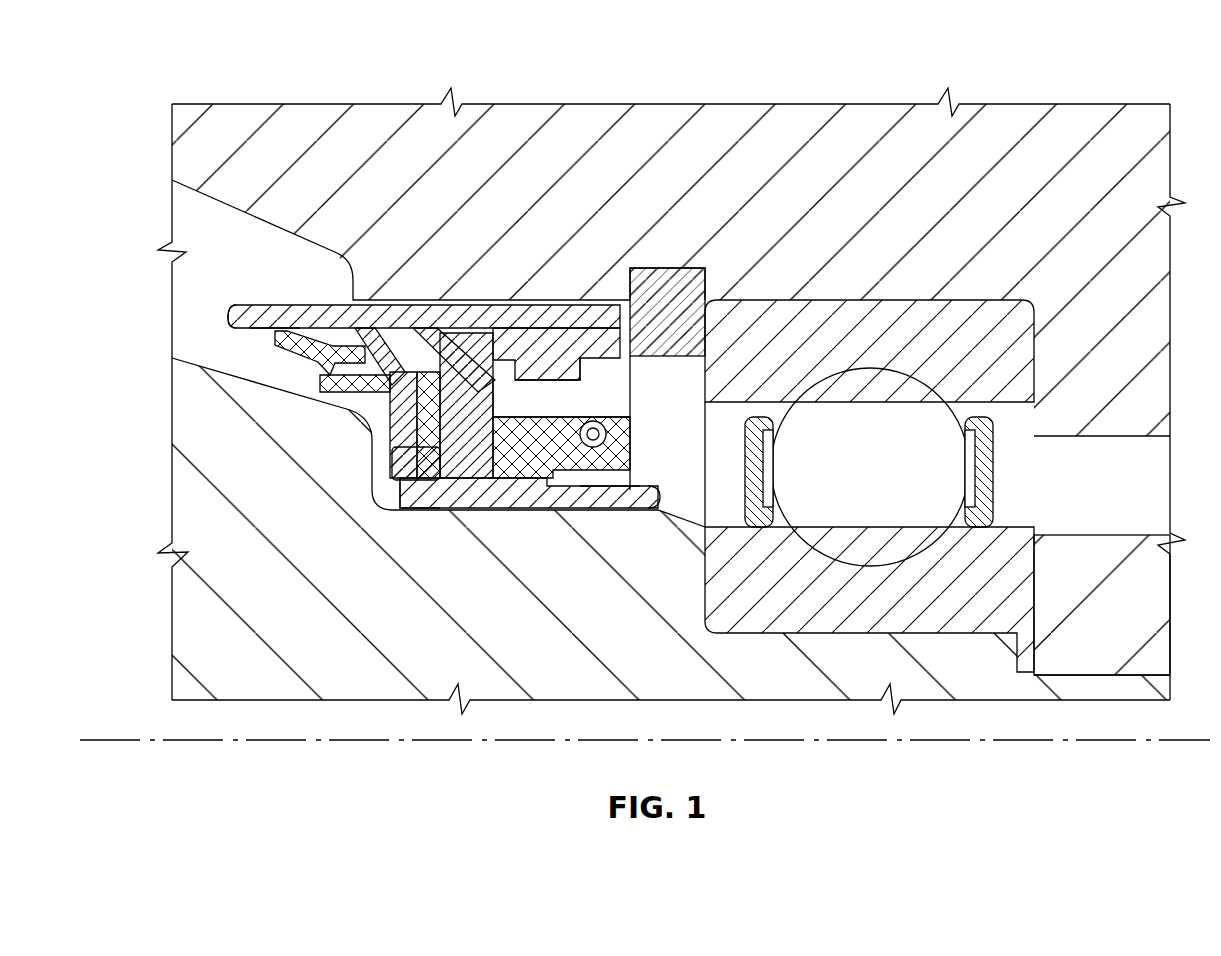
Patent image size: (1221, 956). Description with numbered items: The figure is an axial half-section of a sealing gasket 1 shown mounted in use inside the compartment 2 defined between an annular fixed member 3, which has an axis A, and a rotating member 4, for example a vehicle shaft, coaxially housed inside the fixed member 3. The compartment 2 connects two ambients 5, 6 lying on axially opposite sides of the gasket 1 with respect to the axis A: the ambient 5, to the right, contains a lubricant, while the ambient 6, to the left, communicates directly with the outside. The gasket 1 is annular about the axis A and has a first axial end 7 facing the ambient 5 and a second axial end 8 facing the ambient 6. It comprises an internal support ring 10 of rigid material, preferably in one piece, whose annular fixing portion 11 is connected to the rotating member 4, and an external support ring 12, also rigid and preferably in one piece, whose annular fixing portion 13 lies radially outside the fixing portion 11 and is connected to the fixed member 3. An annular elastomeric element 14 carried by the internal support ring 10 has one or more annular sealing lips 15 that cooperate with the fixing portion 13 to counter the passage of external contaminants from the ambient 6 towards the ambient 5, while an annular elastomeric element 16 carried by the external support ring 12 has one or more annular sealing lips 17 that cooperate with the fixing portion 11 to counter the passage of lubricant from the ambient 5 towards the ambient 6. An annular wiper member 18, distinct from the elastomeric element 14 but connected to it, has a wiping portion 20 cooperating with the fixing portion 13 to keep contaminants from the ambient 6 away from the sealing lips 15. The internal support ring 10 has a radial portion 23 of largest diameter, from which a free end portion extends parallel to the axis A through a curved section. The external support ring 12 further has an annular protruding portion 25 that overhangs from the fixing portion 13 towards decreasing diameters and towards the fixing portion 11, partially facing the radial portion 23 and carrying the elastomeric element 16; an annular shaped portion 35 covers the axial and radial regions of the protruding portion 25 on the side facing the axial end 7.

The sealing gasket 1 is at (462, 410).
The compartment 2 is at (616, 405).
The annular fixed member 3 is at (536, 120).
The rotating member 4 is at (258, 506).
The ambient 5 is at (678, 452).
The ambient 6 is at (406, 344).
The first axial end 7 is at (662, 500).
The second axial end 8 is at (226, 320).
The internal support ring 10 is at (548, 508).
The annular fixing portion 11 is at (528, 498).
The external support ring 12 is at (331, 320).
The annular fixing portion 13 is at (275, 322).
The annular elastomeric element 14 is at (413, 508).
The annular sealing lips 15 is at (377, 332).
The annular elastomeric element 16 is at (622, 296).
The annular sealing lips 17 is at (600, 500).
The annular wiper member 18 is at (348, 394).
The wiping portion 20 is at (296, 360).
The radial portion 23 is at (394, 468).
The annular protruding portion 25 is at (534, 354).
The annular shaped portion 35 is at (584, 374).
The axis A is at (104, 738).